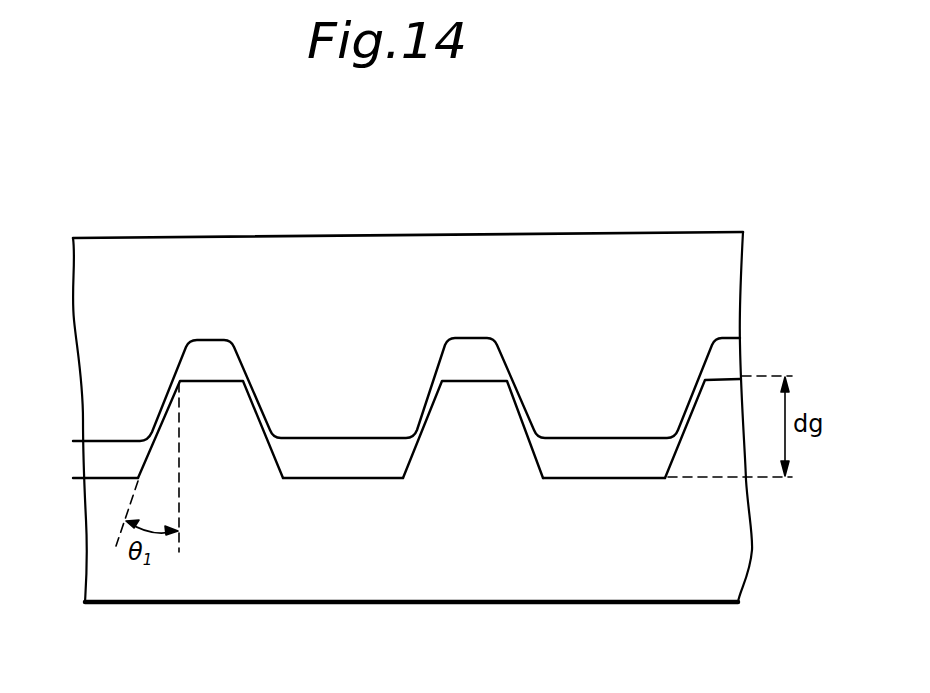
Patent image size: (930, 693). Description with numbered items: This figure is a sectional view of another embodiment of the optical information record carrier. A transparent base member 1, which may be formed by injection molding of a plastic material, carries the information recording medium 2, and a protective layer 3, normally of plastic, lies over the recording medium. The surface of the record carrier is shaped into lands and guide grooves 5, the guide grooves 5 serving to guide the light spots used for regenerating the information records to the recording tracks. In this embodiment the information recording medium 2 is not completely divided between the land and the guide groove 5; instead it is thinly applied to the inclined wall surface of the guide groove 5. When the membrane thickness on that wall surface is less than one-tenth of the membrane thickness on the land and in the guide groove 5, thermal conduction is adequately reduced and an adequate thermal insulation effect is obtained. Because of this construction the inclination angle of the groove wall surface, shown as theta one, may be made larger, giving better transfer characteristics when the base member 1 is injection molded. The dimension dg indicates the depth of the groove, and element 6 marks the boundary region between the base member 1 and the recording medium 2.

The transparent base member 1 is at (733, 563).
The information recording medium 2 is at (214, 356).
The protective layer 3 is at (615, 260).
The guide groove 5 is at (475, 381).
The interface layer 6 is at (615, 480).